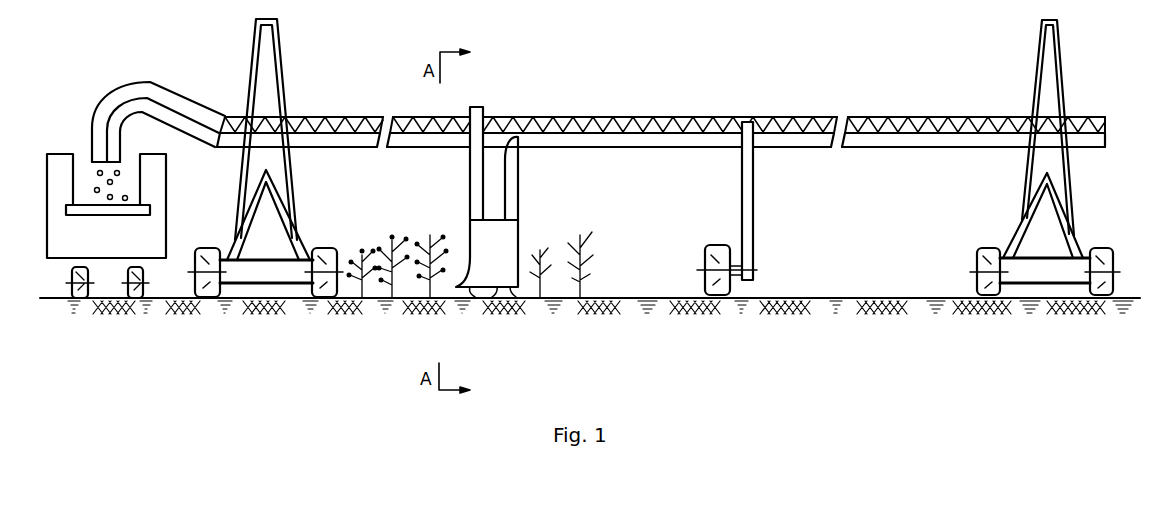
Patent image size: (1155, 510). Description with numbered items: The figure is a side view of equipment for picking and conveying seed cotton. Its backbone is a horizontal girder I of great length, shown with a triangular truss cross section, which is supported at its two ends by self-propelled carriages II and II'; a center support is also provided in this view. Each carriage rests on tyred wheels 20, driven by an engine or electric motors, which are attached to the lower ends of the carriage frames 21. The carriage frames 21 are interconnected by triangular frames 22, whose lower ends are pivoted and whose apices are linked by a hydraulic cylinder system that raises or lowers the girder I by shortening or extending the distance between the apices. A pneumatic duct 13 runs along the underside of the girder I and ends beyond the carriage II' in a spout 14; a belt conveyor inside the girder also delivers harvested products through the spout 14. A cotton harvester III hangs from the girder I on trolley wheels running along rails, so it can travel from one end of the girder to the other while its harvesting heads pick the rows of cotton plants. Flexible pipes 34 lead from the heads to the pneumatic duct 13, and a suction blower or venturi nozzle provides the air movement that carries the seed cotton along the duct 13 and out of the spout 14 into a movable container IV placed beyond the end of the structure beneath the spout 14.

The spout 14 is at (112, 100).
The triangular frame 22 is at (282, 102).
The carriage frame 21 is at (300, 240).
The tyred wheels 20 is at (213, 255).
The pneumatic duct 13 is at (598, 140).
The flexible pipes 34 is at (514, 203).
The horizontal girder I is at (661, 135).
The self-propelled carriage II is at (1057, 218).
The self-propelled carriage II' is at (651, 158).
The cotton harvester III is at (483, 202).
The movable container IV is at (52, 195).